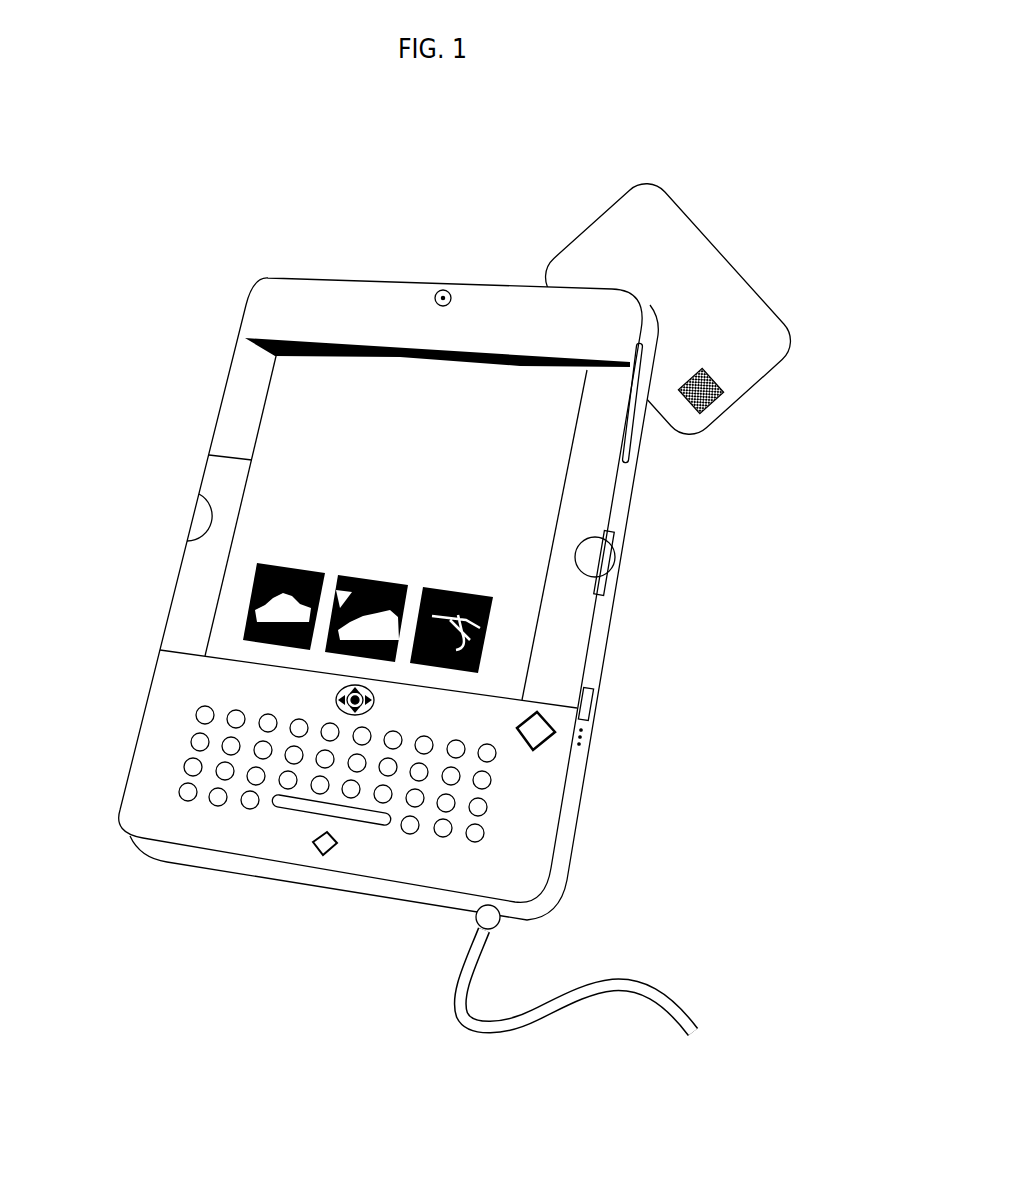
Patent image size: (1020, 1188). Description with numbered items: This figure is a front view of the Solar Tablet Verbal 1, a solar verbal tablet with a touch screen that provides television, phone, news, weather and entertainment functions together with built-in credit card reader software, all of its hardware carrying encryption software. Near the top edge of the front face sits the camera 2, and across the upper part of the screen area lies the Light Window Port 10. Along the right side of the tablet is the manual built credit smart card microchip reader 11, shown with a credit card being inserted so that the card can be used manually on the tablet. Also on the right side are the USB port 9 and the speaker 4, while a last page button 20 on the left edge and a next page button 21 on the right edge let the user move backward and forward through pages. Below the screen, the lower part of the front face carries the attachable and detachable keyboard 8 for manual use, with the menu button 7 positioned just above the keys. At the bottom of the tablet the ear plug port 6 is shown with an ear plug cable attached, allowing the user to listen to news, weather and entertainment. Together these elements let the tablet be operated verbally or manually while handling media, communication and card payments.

The Solar Tablet Verbal 1 is at (208, 377).
The camera 2 is at (445, 290).
The speaker 4 is at (552, 747).
The ear plug port 6 is at (478, 1013).
The menu button 7 is at (335, 697).
The attachable and detachable keyboard 8 is at (143, 672).
The USB port 9 is at (594, 707).
The Light Window Port 10 is at (268, 435).
The manual built credit smart card microchip reader 11 is at (635, 443).
The last page button 20 is at (186, 519).
The next page button 21 is at (597, 550).